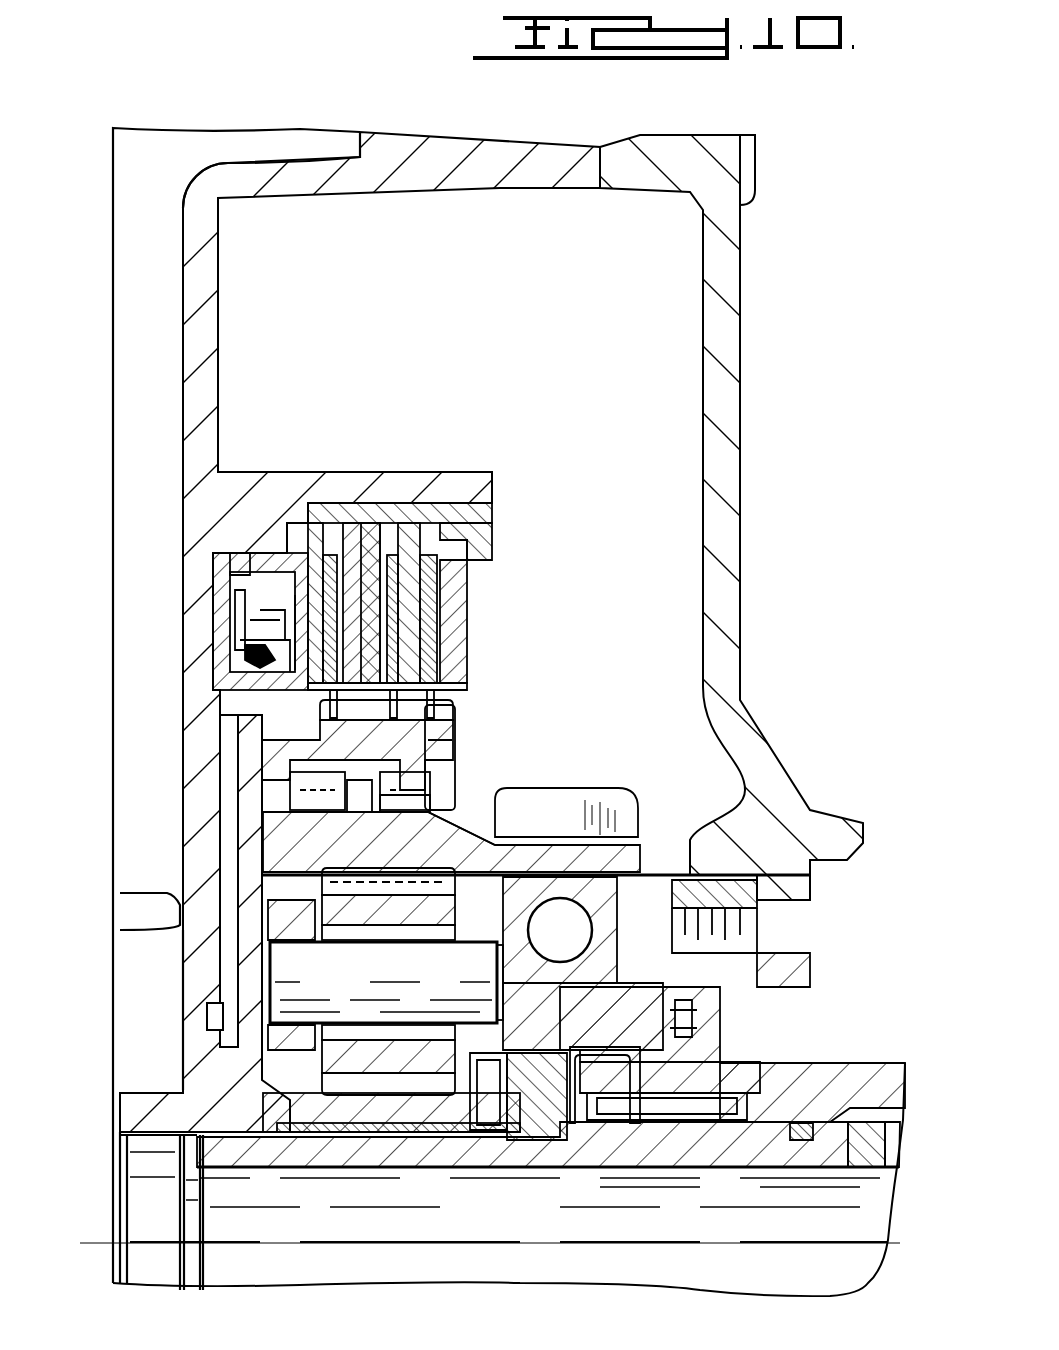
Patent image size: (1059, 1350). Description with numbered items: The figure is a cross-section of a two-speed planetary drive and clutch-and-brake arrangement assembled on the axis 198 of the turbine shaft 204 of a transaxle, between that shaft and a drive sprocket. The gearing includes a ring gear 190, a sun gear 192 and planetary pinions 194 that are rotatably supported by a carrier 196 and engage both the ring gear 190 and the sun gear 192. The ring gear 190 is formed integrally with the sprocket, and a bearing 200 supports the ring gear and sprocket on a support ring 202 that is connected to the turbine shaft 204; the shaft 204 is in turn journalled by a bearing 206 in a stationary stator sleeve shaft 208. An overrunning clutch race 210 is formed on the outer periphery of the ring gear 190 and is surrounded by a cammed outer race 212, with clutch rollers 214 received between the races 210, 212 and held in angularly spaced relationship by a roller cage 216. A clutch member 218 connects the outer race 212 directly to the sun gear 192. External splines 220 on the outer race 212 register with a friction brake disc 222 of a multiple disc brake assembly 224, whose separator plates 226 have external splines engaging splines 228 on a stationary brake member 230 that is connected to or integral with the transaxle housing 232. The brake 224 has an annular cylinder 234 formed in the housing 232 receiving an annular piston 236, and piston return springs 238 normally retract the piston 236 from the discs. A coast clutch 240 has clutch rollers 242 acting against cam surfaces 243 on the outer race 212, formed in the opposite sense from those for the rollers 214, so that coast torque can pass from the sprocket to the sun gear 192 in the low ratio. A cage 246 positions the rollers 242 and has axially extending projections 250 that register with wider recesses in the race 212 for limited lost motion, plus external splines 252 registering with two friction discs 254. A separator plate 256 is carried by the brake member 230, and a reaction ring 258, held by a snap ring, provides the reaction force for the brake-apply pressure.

The ring gear 190 is at (278, 850).
The sun gear 192 is at (328, 1105).
The planetary pinions 194 is at (360, 905).
The carrier 196 is at (460, 996).
The axis of the turbine shaft 198 is at (513, 1236).
The bearing 200 is at (585, 905).
The support ring 202 is at (645, 1020).
The turbine shaft 204 is at (640, 1140).
The bearing 206 is at (715, 1107).
The stationary stator sleeve shaft 208 is at (830, 1075).
The overrunning clutch race 210 is at (385, 806).
The cammed outer race 212 is at (285, 740).
The clutch rollers 214 is at (360, 880).
The roller cage 216 is at (262, 784).
The clutch member 218 is at (245, 952).
The external splines 220 is at (250, 716).
The friction brake discs 222 is at (362, 545).
The multiple disc brake assembly 224 is at (492, 508).
The separator plates 226 is at (430, 535).
The splines 228 is at (332, 503).
The stationary brake member 230 is at (495, 510).
The transaxle housing 232 is at (207, 270).
The annular cylinder 234 is at (227, 585).
The annular piston 236 is at (255, 553).
The piston return springs 238 is at (235, 652).
The coast clutch 240 is at (440, 800).
The clutch rollers 242 is at (432, 815).
The cam surfaces 243 is at (432, 788).
The cage 246 is at (455, 742).
The axially extending projections 250 is at (455, 762).
The external splines 252 is at (455, 718).
The friction discs 254 is at (445, 576).
The separator plate 256 is at (398, 540).
The reaction ring 258 is at (470, 562).